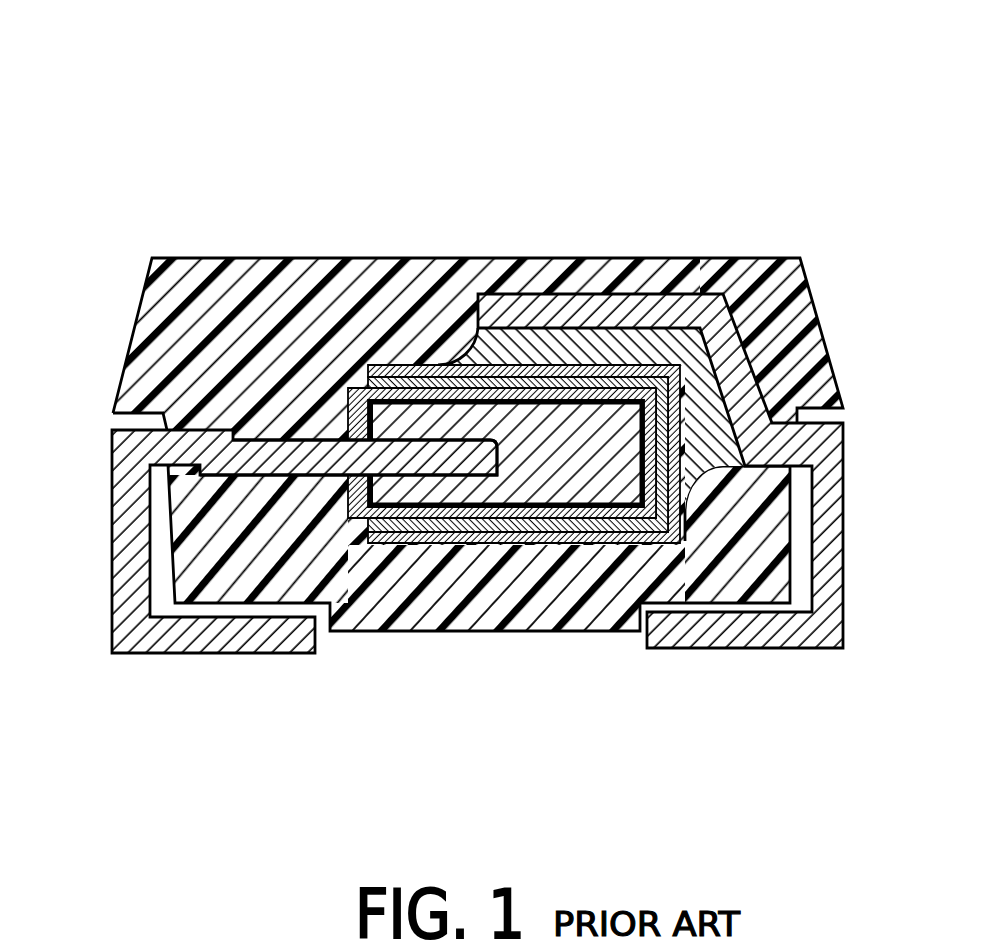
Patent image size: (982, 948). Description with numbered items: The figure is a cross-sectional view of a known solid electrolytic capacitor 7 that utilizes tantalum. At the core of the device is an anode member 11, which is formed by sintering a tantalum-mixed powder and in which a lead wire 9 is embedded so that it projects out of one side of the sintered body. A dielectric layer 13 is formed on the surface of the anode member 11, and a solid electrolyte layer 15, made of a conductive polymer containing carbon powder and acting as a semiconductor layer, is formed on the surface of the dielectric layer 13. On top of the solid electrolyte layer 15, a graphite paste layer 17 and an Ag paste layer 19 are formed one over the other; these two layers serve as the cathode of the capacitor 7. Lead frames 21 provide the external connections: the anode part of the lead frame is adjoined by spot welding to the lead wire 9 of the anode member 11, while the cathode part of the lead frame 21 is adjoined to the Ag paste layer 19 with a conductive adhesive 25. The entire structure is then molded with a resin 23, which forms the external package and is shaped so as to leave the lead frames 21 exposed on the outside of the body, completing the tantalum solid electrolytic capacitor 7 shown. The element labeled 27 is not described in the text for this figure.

The solid electrolytic capacitor 7 is at (553, 205).
The lead wire 9 is at (263, 438).
The anode member 11 is at (387, 420).
The dielectric layer 13 is at (372, 546).
The solid electrolyte layer 15 is at (440, 545).
The graphite paste layer 17 is at (532, 544).
The Ag paste layer 19 is at (578, 532).
The lead frames 21 is at (438, 433).
The resin 23 is at (292, 257).
The conductive adhesive 25 is at (707, 387).
The piezoelectric vibrator unit 27 is at (388, 350).